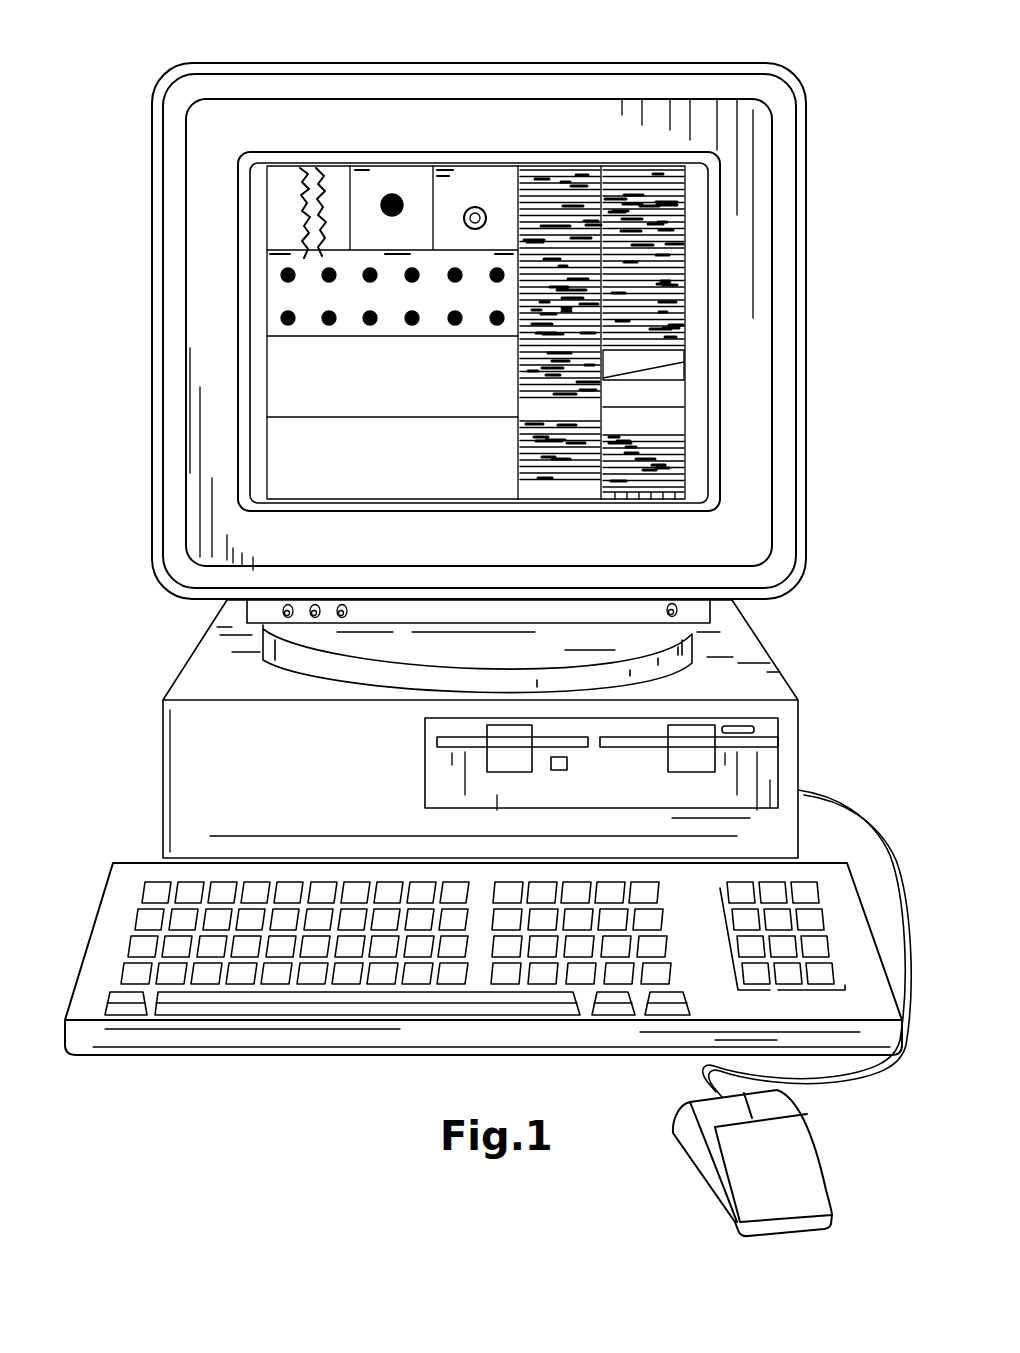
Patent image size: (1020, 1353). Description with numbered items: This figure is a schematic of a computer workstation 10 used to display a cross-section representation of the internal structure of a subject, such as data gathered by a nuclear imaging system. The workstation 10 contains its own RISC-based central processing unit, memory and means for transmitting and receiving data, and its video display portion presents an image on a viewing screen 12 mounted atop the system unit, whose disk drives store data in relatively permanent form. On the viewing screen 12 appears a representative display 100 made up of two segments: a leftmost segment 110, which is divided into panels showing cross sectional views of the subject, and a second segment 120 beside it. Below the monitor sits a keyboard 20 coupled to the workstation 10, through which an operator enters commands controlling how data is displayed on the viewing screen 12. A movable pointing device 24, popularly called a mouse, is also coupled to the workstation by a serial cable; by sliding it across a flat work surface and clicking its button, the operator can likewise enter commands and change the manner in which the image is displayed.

The workstation 10 is at (852, 430).
The viewing screen 12 is at (778, 107).
The display 100 is at (697, 248).
The leftmost segment 110 is at (385, 183).
The segment 120 is at (610, 178).
The keyboard 20 is at (123, 903).
The movable pointing device 24 is at (795, 1153).